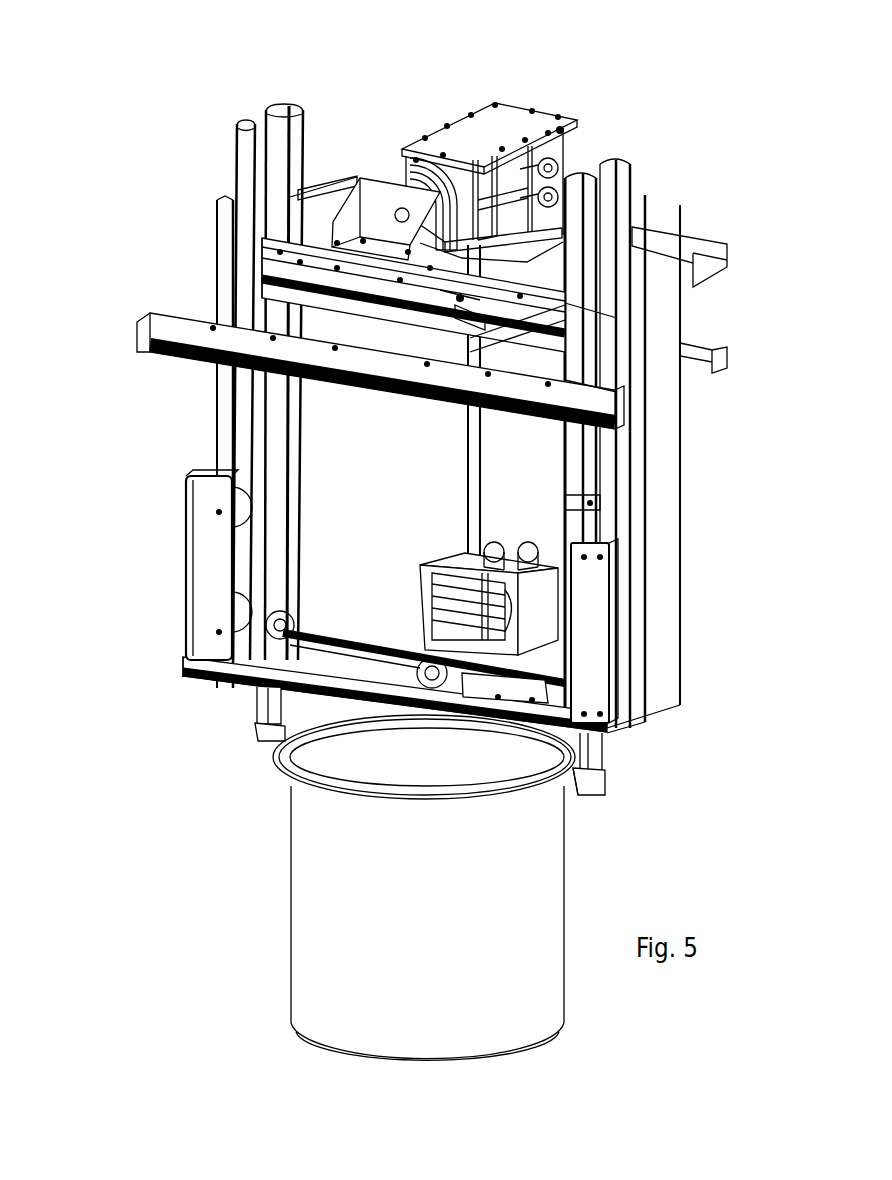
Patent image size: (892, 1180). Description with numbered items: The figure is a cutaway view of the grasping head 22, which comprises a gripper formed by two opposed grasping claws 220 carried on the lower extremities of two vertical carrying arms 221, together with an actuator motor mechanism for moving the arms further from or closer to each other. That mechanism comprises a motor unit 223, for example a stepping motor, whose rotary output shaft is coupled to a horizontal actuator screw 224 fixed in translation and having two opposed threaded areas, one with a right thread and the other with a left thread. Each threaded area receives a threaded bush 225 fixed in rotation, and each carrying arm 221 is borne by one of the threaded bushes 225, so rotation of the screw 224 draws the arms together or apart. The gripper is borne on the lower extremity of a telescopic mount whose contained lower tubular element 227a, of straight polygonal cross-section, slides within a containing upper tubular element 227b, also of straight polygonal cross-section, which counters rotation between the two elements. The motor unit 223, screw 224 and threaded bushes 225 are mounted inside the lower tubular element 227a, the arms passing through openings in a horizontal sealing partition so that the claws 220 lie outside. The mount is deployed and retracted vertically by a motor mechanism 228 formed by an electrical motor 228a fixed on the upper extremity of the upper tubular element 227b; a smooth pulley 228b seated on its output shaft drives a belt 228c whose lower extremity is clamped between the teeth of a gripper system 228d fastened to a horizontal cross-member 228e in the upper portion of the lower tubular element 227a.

The grasping head 22 is at (203, 439).
The grasping claw 220 is at (256, 740).
The carrying arm 221 is at (254, 700).
The motor unit 223 is at (418, 600).
The horizontal actuator screw 224 is at (330, 612).
The threaded bush 225 is at (215, 644).
The lower tubular element 227a is at (590, 502).
The upper tubular element 227b is at (610, 550).
The motor mechanism 228 is at (557, 101).
The electrical motor 228a is at (552, 216).
The smooth pulley 228b is at (400, 177).
The belt 228c is at (545, 200).
The gripper system 228d is at (470, 296).
The horizontal cross-member 228e is at (470, 318).